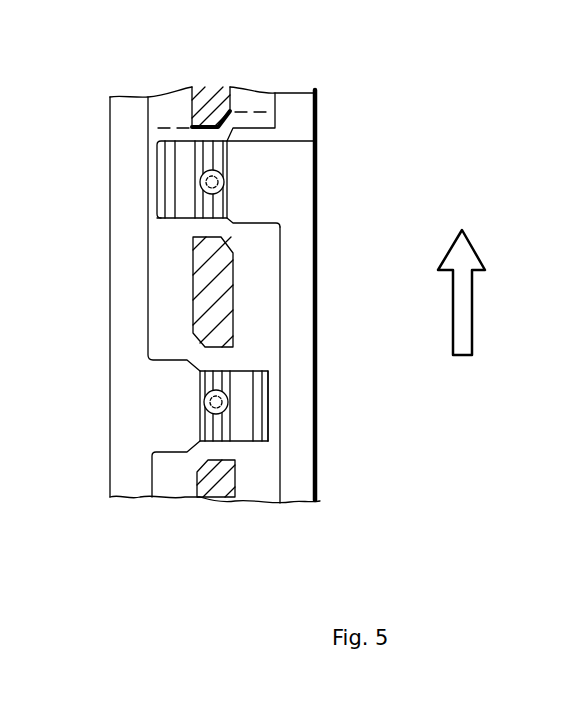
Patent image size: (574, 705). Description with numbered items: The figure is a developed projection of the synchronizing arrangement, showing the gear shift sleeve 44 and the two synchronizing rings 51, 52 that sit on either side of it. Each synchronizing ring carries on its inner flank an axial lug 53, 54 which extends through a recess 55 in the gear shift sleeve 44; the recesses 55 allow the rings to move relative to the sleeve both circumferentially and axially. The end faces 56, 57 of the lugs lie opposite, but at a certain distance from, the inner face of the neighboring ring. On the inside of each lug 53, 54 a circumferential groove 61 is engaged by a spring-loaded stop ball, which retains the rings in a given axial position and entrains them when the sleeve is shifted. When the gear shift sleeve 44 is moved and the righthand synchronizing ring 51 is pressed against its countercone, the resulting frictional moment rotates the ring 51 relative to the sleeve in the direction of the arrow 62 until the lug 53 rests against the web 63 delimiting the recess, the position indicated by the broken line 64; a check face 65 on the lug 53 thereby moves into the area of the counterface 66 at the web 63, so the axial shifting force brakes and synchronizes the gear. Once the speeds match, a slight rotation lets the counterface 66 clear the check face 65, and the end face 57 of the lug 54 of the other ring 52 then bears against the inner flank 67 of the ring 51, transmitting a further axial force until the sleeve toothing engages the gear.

The gear shift sleeve 44 is at (175, 485).
The synchronizing ring 51 is at (300, 360).
The synchronizing ring 52 is at (122, 208).
The lug 53 is at (262, 163).
The lug 54 is at (168, 423).
The recess 55 is at (219, 352).
The end face 56 is at (158, 188).
The end face 57 is at (268, 413).
The groove 61 is at (268, 430).
The arrow 62 is at (464, 327).
The web 63 is at (203, 96).
The broken line 64 is at (168, 126).
The check face 65 is at (232, 142).
The counterface 66 is at (213, 113).
The inner flank 67 is at (282, 392).